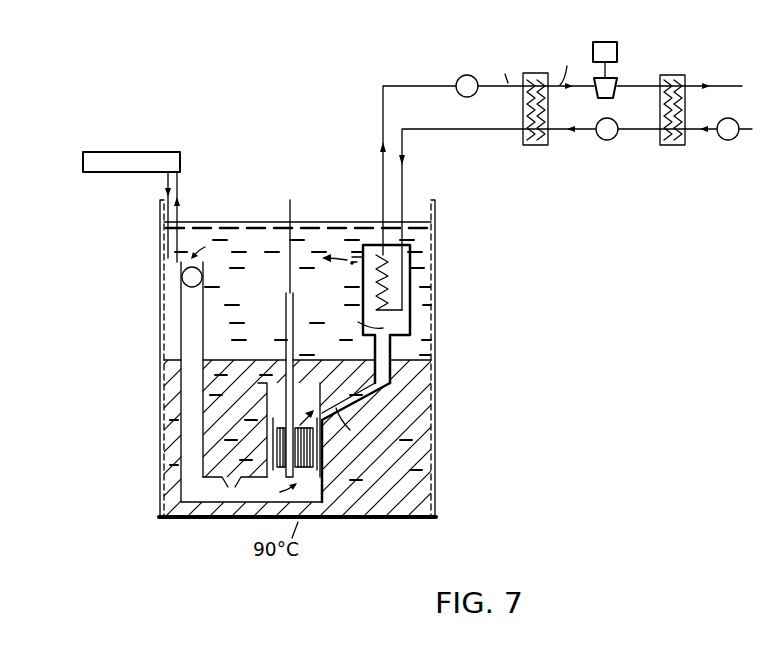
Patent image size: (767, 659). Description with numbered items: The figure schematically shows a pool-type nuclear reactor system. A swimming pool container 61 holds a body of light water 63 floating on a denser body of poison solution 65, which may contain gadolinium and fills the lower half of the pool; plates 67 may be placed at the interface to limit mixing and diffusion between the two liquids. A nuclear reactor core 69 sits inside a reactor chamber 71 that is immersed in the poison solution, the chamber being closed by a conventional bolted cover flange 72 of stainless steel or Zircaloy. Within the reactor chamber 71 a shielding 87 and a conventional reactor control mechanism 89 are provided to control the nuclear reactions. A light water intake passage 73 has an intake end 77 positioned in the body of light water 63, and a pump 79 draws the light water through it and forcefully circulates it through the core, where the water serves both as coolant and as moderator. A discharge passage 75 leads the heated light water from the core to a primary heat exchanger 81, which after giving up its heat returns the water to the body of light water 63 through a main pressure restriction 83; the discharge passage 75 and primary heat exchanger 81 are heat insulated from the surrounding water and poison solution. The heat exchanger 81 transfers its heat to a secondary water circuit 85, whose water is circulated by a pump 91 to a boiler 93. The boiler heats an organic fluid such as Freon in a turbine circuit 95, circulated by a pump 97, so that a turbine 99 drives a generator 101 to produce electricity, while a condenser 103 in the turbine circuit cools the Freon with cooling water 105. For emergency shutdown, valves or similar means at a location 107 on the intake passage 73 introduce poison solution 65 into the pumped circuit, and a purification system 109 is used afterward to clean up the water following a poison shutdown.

The swimming pool container 61 is at (158, 322).
The body of light water 63 is at (215, 340).
The body of poison solution 65 is at (213, 423).
The plates 67 is at (413, 367).
The nuclear reactor core 69 is at (385, 455).
The reactor chamber 71 is at (332, 497).
The bolted cover flange 72 is at (385, 398).
The light water intake passage 73 is at (173, 468).
The discharge passage 75 is at (383, 412).
The intake end 77 is at (181, 263).
The pump 79 is at (182, 277).
The primary heat exchanger 81 is at (412, 300).
The main pressure restriction 83 is at (372, 230).
The secondary water circuit 85 is at (448, 135).
The shielding 87 is at (360, 497).
The reactor control mechanism 89 is at (289, 206).
The pump 91 is at (457, 78).
The boiler 93 is at (537, 146).
The turbine circuit 95 is at (640, 132).
The pump 97 is at (605, 142).
The turbine 99 is at (678, 75).
The generator 101 is at (617, 52).
The condenser 103 is at (680, 146).
The cooling water 105 is at (713, 140).
The location 107 is at (248, 485).
The purification system 109 is at (132, 150).